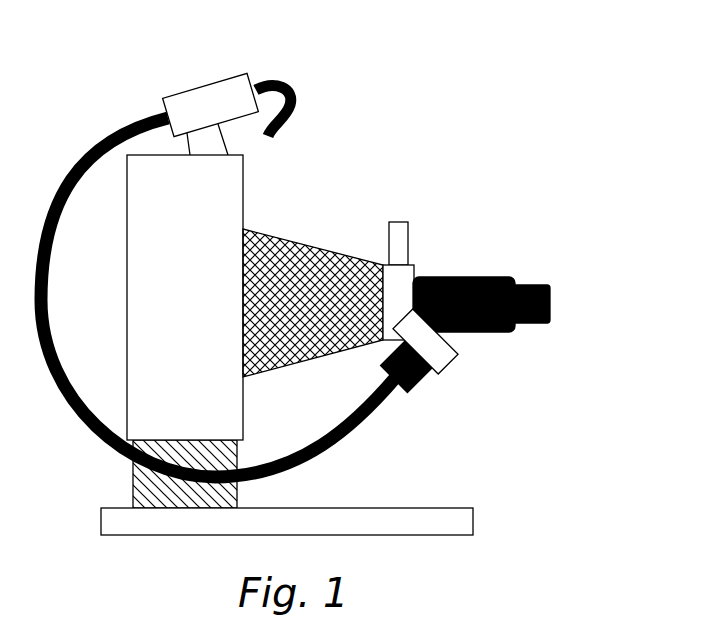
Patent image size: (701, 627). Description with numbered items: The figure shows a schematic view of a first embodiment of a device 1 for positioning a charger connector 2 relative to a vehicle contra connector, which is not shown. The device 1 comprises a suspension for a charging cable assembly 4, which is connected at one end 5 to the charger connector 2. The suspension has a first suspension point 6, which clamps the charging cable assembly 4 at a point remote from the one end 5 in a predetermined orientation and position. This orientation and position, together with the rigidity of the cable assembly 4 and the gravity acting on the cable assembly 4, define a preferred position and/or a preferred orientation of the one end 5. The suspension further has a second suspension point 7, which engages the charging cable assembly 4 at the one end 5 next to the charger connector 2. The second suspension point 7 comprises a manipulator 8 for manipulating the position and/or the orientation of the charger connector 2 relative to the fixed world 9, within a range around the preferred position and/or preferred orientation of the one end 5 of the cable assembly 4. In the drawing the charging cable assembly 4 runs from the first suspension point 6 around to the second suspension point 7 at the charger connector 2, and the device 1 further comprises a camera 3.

The device 1 is at (509, 106).
The charger connector 2 is at (558, 300).
The camera 3 is at (419, 234).
The charging cable assembly 4 is at (349, 443).
The one end 5 is at (389, 402).
The first suspension point 6 is at (200, 82).
The second suspension point 7 is at (457, 364).
The manipulator 8 is at (308, 232).
The fixed world 9 is at (99, 519).